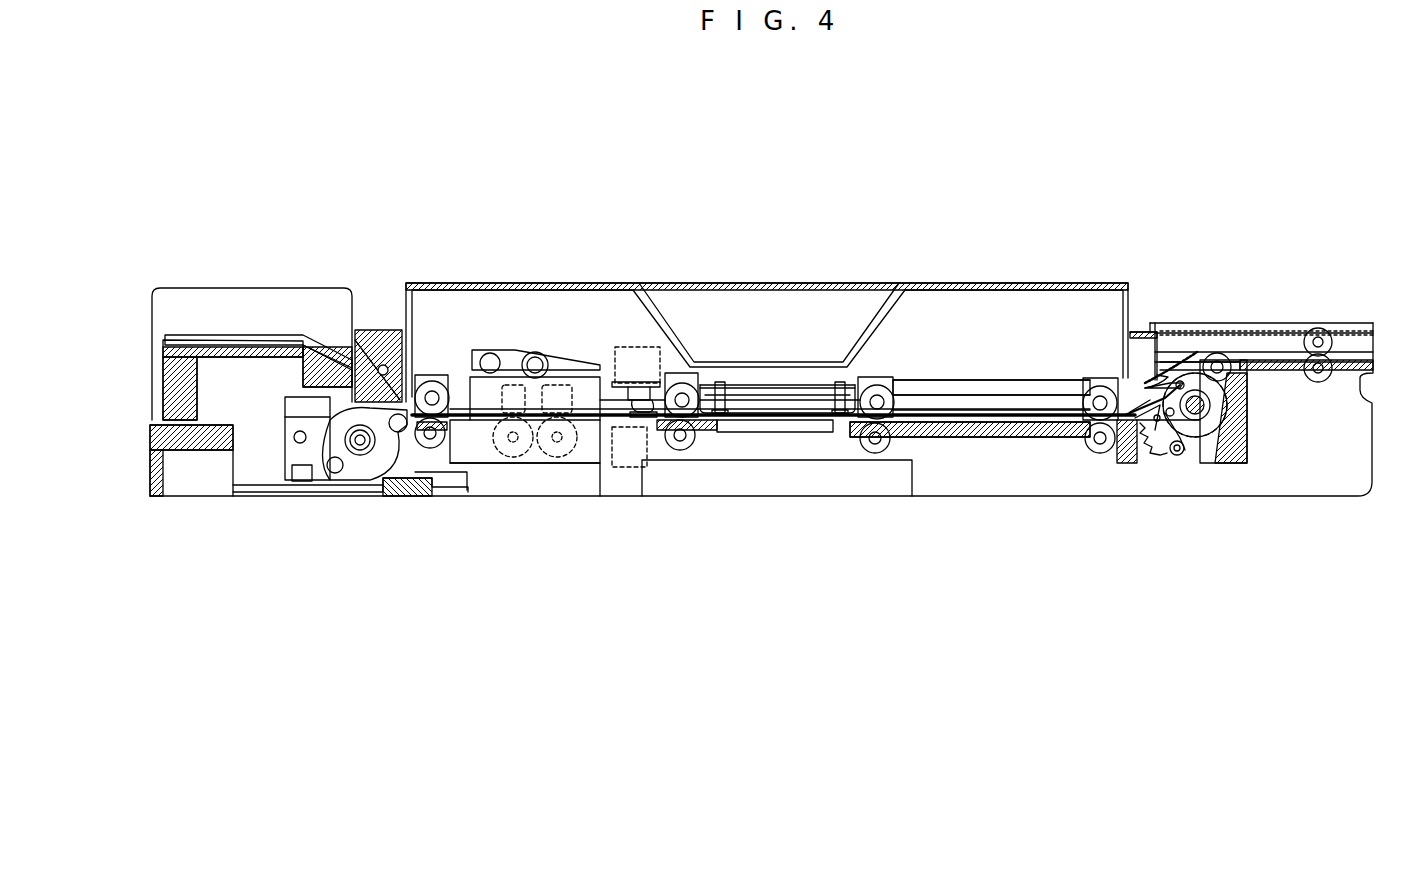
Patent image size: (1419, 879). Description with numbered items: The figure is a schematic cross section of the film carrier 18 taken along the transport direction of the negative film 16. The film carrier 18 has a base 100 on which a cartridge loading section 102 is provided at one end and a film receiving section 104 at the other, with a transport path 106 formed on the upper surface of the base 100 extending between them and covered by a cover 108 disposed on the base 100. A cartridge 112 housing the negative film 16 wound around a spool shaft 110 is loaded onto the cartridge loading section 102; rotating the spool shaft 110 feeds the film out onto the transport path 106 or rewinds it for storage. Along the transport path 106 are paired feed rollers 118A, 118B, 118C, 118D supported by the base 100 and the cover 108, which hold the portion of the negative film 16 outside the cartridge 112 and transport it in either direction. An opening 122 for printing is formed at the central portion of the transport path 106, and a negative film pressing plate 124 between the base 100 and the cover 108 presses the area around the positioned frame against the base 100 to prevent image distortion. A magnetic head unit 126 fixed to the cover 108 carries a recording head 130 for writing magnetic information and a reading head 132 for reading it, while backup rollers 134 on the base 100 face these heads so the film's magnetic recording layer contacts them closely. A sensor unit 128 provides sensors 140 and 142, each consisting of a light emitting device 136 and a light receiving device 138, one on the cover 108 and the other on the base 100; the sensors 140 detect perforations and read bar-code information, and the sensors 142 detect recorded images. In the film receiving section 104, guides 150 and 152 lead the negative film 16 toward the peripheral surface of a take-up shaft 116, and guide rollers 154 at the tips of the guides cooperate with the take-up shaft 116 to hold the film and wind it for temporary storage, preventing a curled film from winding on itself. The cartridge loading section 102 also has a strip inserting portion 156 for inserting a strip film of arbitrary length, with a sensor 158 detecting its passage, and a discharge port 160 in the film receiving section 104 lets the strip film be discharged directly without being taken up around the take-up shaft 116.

The negative film 16 is at (1215, 420).
The film carrier 18 is at (997, 222).
The base 100 is at (1012, 484).
The cartridge loading section 102 is at (140, 330).
The film receiving section 104 is at (1325, 306).
The transport path 106 is at (985, 380).
The cover 108 is at (542, 284).
The spool shaft 110 is at (360, 455).
The cartridge 112 is at (330, 420).
The take-up shaft 116 is at (1205, 402).
The feed roller 118A is at (430, 447).
The feed roller 118B is at (680, 450).
The feed roller 118C is at (874, 452).
The feed roller 118D is at (1100, 425).
The opening 122 is at (826, 350).
The negative film pressing plate 124 is at (857, 380).
The magnetic head unit 126 is at (482, 342).
The sensor unit 128 is at (640, 345).
The recording head 130 is at (515, 440).
The reading head 132 is at (557, 440).
The backup roller 134 is at (555, 465).
The light emitting device 136 is at (377, 365).
The light receiving device 138 is at (377, 365).
The sensor 140 is at (630, 405).
The sensor 142 is at (645, 412).
The guide 150 is at (1150, 370).
The guide 152 is at (1200, 455).
The guide roller 154 is at (1178, 385).
The strip inserting portion 156 is at (200, 343).
The sensor 158 is at (407, 412).
The discharge port 160 is at (1380, 345).